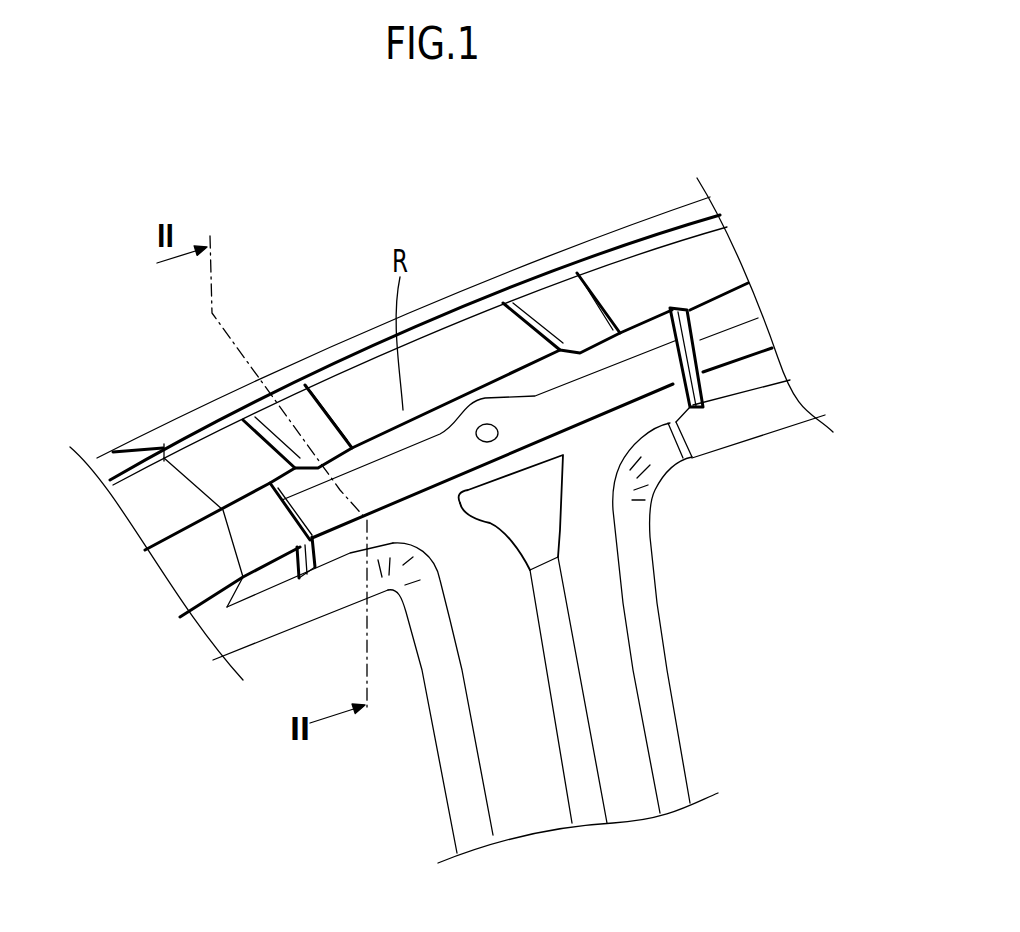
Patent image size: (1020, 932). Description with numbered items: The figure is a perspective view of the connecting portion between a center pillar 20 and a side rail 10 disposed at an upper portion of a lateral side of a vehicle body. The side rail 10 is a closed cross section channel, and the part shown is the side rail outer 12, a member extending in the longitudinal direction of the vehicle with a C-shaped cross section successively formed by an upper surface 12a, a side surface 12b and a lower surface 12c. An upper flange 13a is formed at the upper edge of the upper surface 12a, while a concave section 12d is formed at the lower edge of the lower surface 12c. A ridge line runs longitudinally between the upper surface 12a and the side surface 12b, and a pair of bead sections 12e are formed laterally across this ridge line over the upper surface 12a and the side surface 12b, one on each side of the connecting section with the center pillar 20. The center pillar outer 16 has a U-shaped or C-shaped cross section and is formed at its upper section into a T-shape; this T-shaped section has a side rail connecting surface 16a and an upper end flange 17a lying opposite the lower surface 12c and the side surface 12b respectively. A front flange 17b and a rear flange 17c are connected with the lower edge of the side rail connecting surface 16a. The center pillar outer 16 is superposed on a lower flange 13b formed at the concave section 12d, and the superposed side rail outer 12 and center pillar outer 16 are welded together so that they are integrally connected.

The side rail 10 is at (704, 176).
The side rail outer 12 is at (750, 243).
The upper surface 12a is at (138, 509).
The side surface 12b is at (165, 578).
The lower surface 12c is at (193, 625).
The concave section 12d is at (670, 328).
The bead sections 12e is at (554, 300).
The upper flange 13a is at (160, 435).
The lower flange 13b is at (283, 630).
The center pillar outer 16 is at (622, 677).
The side rail connecting surface 16a is at (680, 460).
The upper end flange 17a is at (663, 362).
The front flange 17b is at (443, 745).
The rear flange 17c is at (650, 604).
The center pillar 20 is at (420, 783).